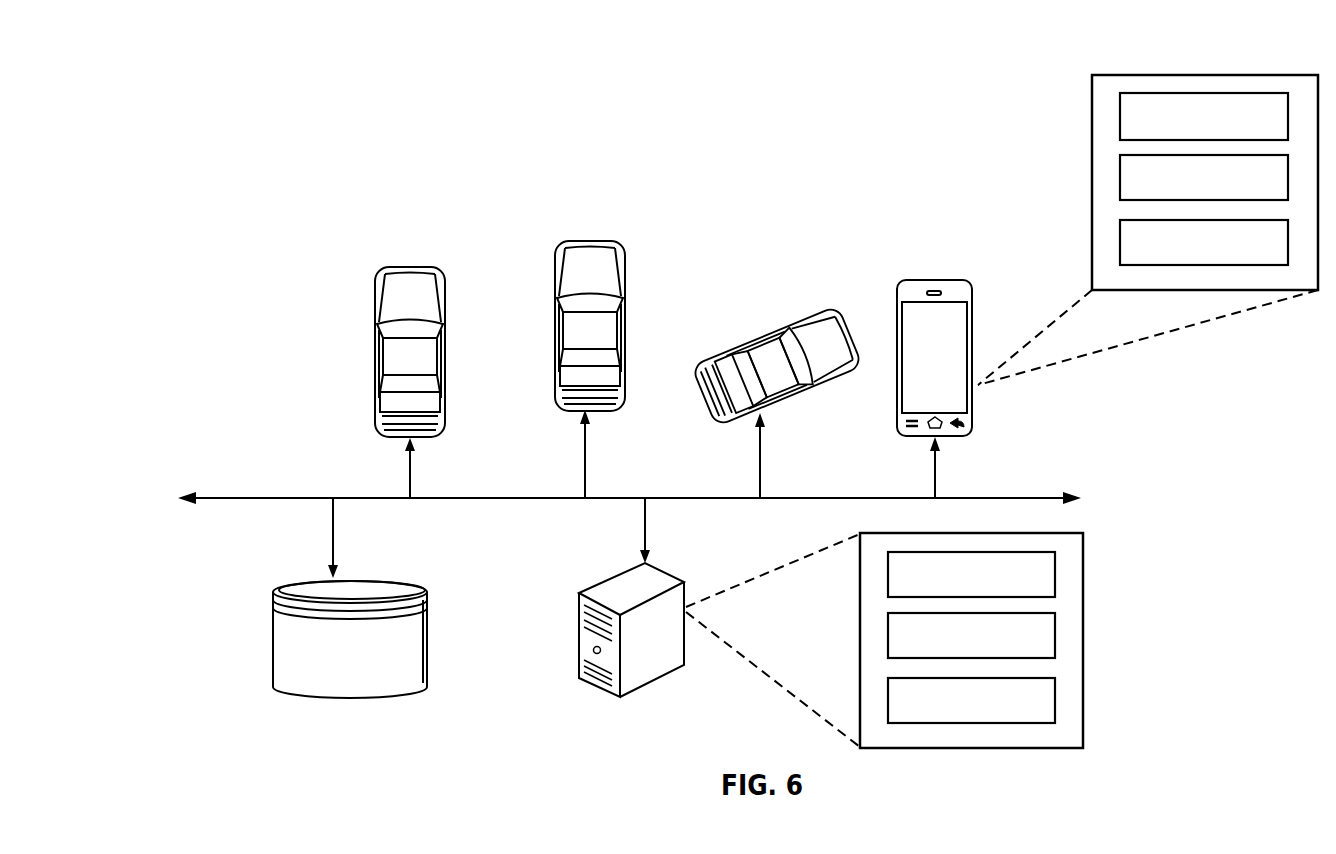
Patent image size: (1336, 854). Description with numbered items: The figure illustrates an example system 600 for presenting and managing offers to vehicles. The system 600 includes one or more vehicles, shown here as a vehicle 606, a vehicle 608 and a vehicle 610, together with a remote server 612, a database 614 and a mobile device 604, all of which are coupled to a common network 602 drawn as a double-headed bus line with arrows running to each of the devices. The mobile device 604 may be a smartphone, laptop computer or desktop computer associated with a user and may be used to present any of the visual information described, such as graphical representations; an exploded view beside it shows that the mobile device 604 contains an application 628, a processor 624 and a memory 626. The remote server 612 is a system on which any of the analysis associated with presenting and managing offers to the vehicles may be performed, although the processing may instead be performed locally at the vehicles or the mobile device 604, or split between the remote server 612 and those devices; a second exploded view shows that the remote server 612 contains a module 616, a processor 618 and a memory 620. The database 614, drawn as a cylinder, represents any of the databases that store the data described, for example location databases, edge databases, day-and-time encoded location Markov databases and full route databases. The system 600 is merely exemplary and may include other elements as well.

The system 600 is at (236, 116).
The network 602 is at (295, 498).
The mobile device 604 is at (936, 280).
The vehicle 606 is at (812, 310).
The vehicle 608 is at (412, 268).
The vehicle 610 is at (589, 242).
The remote server 612 is at (612, 578).
The database 614 is at (273, 625).
The module 616 is at (1055, 573).
The processor 618 is at (1055, 635).
The memory 620 is at (1055, 695).
The processor 624 is at (1120, 187).
The memory 626 is at (1120, 252).
The application 628 is at (1120, 123).